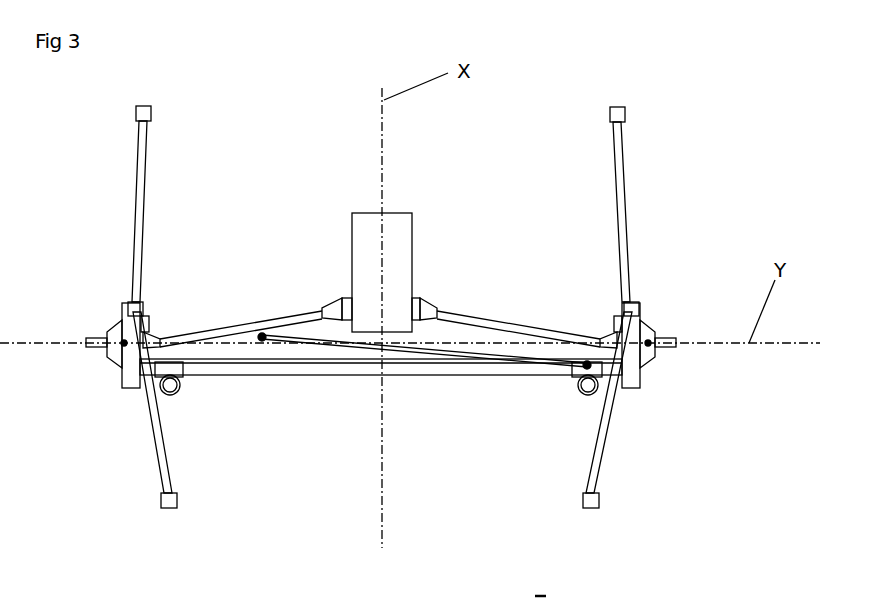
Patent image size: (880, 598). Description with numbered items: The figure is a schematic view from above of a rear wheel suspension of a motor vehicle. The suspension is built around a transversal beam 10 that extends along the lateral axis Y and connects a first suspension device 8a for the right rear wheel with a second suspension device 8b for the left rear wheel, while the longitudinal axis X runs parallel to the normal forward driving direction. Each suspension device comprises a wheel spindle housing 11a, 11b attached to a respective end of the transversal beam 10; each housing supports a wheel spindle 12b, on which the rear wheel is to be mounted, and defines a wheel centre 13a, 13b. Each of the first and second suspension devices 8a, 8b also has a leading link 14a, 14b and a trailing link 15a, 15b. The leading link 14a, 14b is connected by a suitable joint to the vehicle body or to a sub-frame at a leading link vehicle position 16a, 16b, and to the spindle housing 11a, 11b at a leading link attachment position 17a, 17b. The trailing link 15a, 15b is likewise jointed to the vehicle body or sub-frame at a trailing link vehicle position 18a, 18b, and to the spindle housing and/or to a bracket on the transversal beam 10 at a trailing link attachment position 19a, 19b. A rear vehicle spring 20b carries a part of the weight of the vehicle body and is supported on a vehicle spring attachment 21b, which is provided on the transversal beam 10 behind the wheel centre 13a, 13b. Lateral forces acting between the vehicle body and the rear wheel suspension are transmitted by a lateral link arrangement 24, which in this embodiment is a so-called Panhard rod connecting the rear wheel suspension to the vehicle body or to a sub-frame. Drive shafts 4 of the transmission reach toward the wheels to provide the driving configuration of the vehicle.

The drive shaft 4 is at (285, 315).
The first suspension device 8a is at (515, 270).
The second suspension device 8b is at (238, 244).
The transversal beam 10 is at (440, 370).
The wheel spindle housing 11a is at (638, 366).
The wheel spindle housing 11b is at (128, 372).
The wheel spindle 12b is at (87, 338).
The wheel centre 13a is at (648, 344).
The wheel centre 13b is at (124, 344).
The leading link 14a is at (608, 458).
The leading link 14b is at (153, 443).
The trailing link 15a is at (630, 200).
The trailing link 15b is at (140, 197).
The leading link vehicle position 16a is at (583, 502).
The leading link vehicle position 16b is at (178, 500).
The leading link attachment position 17a is at (618, 312).
The leading link attachment position 17b is at (145, 311).
The trailing link vehicle position 18a is at (610, 113).
The trailing link vehicle position 18b is at (151, 113).
The trailing link attachment position 19a is at (622, 303).
The trailing link attachment position 19b is at (142, 302).
The rear vehicle spring 20b is at (180, 394).
The vehicle spring attachment 21b is at (178, 368).
The lateral link arrangement 24 is at (402, 350).